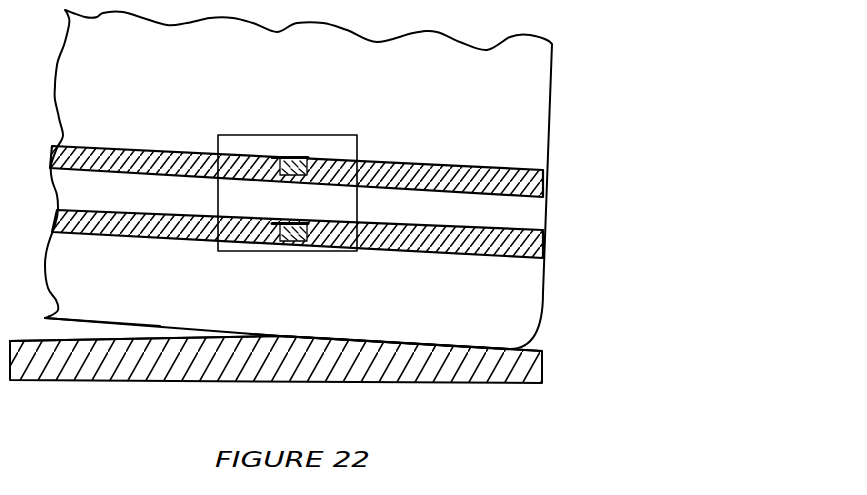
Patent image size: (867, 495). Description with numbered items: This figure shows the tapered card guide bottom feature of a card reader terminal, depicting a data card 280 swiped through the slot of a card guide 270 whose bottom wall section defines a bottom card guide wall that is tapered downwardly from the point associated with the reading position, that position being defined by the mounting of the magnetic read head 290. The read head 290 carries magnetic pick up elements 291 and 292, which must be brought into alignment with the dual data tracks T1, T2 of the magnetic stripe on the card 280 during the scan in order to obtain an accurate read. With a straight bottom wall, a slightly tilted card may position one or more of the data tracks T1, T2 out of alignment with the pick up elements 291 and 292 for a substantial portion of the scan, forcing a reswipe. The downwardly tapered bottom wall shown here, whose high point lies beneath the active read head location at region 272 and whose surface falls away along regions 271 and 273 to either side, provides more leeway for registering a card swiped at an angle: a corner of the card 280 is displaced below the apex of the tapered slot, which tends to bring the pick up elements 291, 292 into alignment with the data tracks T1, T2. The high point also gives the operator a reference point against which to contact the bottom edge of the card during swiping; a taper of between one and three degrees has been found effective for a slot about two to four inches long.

The card guide 270 is at (517, 375).
The left gap region between body and substrate 271 is at (72, 340).
The contact point of body with substrate 272 is at (303, 334).
The right contact region of body on substrate 273 is at (413, 337).
The body 280 is at (553, 283).
The magnetic read head 290 is at (326, 130).
The magnetic pick up element 291 is at (292, 158).
The magnetic pick up element 292 is at (280, 225).
The data track T1 is at (543, 182).
The data track T2 is at (543, 242).